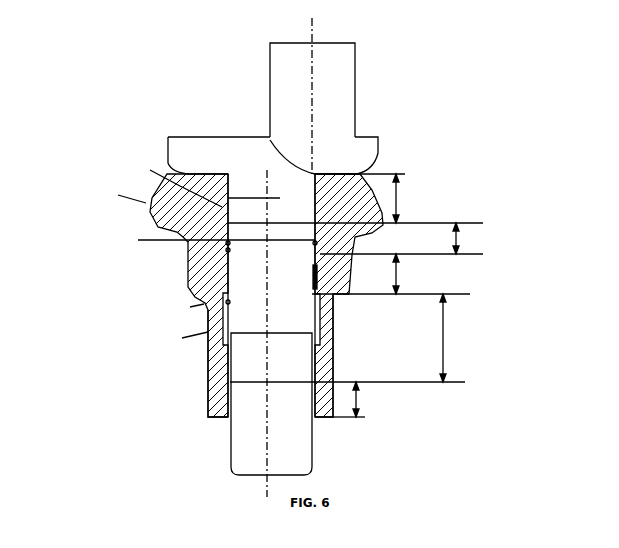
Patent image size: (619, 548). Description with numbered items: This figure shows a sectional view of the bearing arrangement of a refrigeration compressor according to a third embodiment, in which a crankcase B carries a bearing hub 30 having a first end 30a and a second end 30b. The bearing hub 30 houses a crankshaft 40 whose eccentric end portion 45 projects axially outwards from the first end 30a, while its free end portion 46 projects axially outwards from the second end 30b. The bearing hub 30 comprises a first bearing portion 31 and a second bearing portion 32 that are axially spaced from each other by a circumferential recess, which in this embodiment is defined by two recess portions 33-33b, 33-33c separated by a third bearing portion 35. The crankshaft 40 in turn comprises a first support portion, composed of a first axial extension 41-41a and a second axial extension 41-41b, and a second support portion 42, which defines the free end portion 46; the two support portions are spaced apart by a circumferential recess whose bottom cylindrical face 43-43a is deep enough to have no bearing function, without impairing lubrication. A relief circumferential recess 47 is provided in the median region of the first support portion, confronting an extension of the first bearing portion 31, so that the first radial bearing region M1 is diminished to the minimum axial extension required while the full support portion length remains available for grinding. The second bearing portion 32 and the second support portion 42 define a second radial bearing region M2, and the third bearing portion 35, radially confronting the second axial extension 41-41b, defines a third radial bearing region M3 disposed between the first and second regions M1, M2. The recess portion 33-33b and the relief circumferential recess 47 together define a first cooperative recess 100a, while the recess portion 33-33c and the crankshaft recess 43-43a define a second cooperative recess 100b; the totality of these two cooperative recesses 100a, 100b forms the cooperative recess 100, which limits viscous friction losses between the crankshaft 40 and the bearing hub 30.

The bearing hub 30 is at (214, 273).
The first end 30a is at (306, 170).
The second end 30b is at (310, 417).
The first bearing portion 31 is at (228, 198).
The second bearing portion 32 is at (311, 372).
The recess portion of circumferential recess 33-33b is at (204, 235).
The recess portion of circumferential recess 33-33c is at (174, 339).
The third bearing portion 35 is at (228, 266).
The crankshaft 40 is at (287, 308).
The first axial extension of first support portion 41-41a is at (227, 209).
The second axial extension of first support portion 41-41b is at (173, 307).
The second support portion 42 is at (223, 398).
The circumferential recess with bottom cylindrical face 43-43a is at (317, 356).
The eccentric end portion 45 is at (299, 73).
The free end portion 46 is at (231, 452).
The relief circumferential recess 47 is at (354, 230).
The crankcase B is at (151, 204).
The first radial bearing region M1 is at (355, 198).
The second radial bearing region M2 is at (357, 399).
The third radial bearing region M3 is at (397, 274).
The cooperative recess 100 is at (506, 302).
The first cooperative recess 100a is at (512, 238).
The second cooperative recess 100b is at (484, 338).